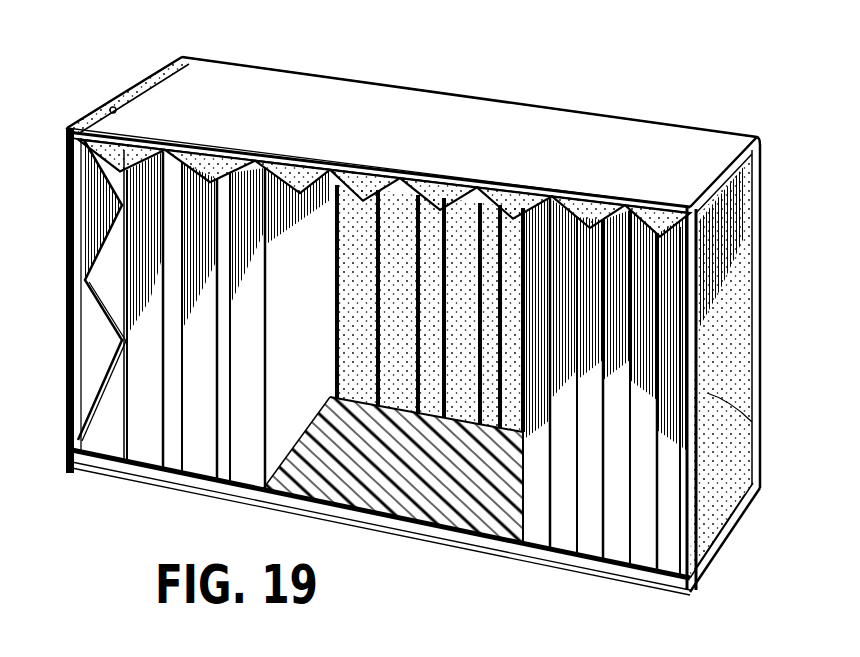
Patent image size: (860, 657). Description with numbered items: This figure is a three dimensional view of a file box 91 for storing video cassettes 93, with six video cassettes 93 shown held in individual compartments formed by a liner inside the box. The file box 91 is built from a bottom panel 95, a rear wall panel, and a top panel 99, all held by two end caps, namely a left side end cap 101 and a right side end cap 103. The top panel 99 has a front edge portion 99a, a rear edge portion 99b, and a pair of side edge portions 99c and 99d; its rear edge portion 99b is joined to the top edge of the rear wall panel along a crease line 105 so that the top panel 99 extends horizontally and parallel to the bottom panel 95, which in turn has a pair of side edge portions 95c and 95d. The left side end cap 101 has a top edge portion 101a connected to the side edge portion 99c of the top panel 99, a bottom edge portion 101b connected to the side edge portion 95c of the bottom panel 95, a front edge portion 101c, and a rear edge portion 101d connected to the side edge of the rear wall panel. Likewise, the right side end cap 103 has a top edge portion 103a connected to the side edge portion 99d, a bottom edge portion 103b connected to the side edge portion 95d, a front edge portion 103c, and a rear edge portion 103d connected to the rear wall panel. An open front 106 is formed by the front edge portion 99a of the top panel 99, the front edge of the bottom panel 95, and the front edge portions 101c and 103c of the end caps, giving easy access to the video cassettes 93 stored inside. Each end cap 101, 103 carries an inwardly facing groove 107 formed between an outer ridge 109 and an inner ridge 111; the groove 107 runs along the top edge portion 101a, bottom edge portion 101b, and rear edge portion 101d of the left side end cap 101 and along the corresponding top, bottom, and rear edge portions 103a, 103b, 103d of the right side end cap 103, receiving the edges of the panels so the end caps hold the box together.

The file box 91 is at (552, 86).
The video cassettes 93 is at (140, 133).
The bottom panel 95 is at (398, 518).
The side edge portion 95c is at (98, 468).
The side edge portion 95d is at (707, 563).
The top panel 99 is at (478, 150).
The front edge portion 99a is at (314, 152).
The rear edge portion 99b is at (360, 100).
The side edge portion 99c is at (168, 78).
The side edge portion 99d is at (722, 145).
The left side end cap 101 is at (80, 252).
The top edge portion 101a is at (141, 77).
The bottom edge portion 101b is at (85, 418).
The front edge portion 101c is at (90, 337).
The rear edge portion 101d is at (176, 57).
The right side end cap 103 is at (737, 312).
The top edge portion 103a is at (757, 137).
The bottom edge portion 103b is at (723, 512).
The front edge portion 103c is at (707, 393).
The rear edge portion 103d is at (743, 370).
The crease line 105 is at (412, 132).
The open front 106 is at (352, 497).
The inwardly facing groove 107 is at (110, 108).
The outer ridge 109 is at (117, 93).
The inner ridge 111 is at (68, 128).